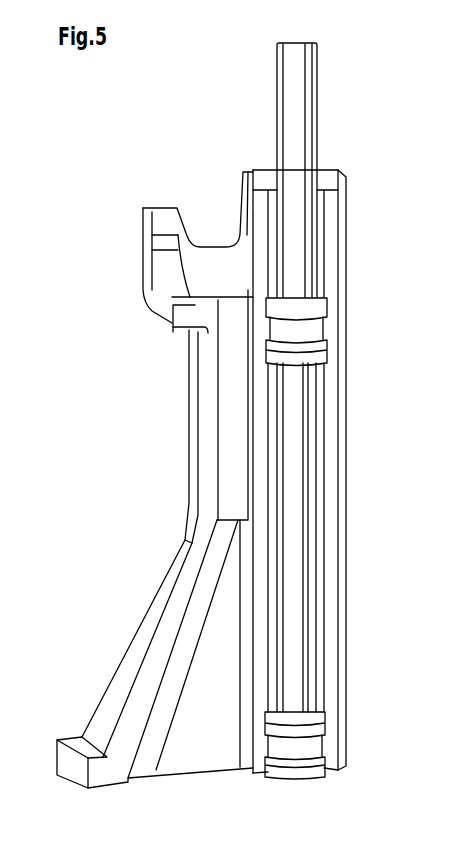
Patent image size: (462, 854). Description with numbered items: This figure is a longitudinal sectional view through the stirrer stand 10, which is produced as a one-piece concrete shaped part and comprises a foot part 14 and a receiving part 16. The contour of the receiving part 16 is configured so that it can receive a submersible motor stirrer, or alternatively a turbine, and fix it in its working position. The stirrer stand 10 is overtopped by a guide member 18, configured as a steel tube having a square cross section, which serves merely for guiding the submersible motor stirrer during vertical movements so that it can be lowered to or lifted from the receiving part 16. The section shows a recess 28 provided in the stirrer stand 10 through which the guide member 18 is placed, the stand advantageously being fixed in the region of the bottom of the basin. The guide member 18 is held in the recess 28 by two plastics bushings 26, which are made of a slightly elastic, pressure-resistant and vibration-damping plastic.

The stirrer stand 10 is at (344, 498).
The foot part 14 is at (133, 695).
The receiving part 16 is at (163, 275).
The guide member 18 is at (313, 88).
The plastics bushings 26 is at (325, 303).
The recess 28 is at (318, 470).